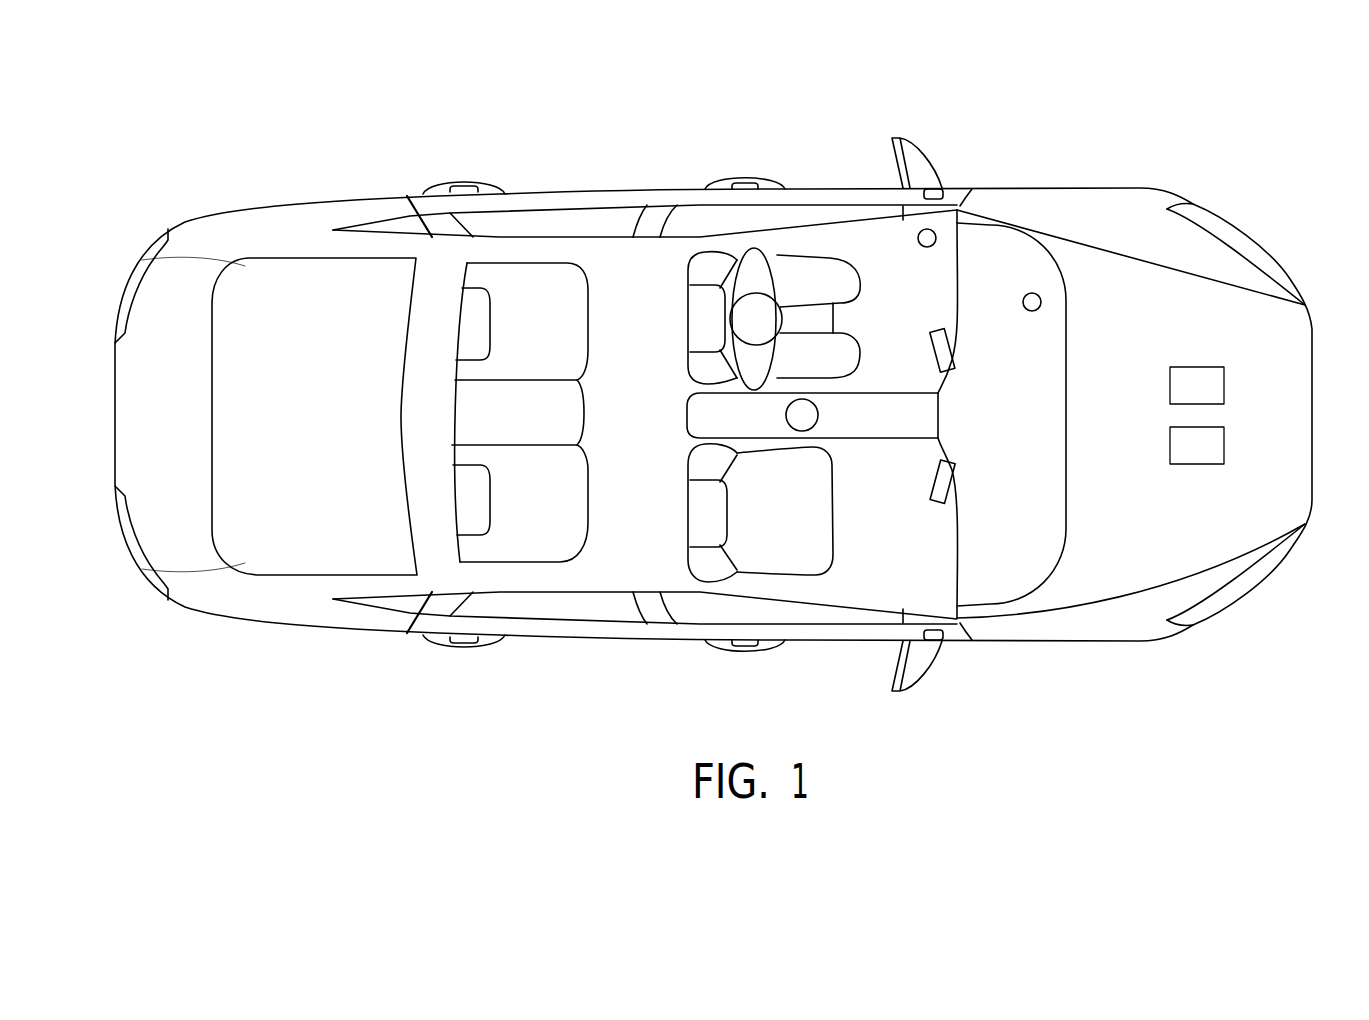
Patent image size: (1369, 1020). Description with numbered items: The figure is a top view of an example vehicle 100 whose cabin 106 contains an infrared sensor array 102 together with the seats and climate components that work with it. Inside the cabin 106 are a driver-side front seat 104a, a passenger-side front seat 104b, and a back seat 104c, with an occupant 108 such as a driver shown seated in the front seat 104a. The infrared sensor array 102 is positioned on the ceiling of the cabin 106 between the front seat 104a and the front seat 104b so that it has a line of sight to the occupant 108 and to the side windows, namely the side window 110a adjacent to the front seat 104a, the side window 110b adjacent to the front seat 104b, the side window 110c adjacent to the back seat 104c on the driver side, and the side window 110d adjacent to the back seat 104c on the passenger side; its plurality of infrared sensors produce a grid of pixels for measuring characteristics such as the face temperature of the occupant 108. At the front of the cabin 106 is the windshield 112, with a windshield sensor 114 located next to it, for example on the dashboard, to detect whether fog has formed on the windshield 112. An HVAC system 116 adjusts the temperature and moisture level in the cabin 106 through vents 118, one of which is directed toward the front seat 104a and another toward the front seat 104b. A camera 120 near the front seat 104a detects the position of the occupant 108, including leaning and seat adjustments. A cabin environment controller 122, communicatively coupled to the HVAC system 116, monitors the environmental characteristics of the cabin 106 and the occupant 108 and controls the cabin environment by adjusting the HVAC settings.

The vehicle 100 is at (294, 140).
The infrared sensor array 102 is at (818, 412).
The front seat 104a is at (703, 305).
The front seat 104b is at (705, 507).
The back seat 104c is at (551, 414).
The cabin 106 is at (620, 559).
The occupant 108 is at (755, 322).
The side window 110a is at (793, 223).
The side window 110b is at (795, 611).
The side window 110c is at (550, 218).
The side window 110d is at (550, 612).
The windshield 112 is at (1003, 272).
The windshield sensor 114 is at (1041, 304).
The HVAC system 116 is at (1178, 395).
The vents 118 is at (930, 350).
The camera 120 is at (918, 241).
The cabin environment controller 122 is at (1178, 457).